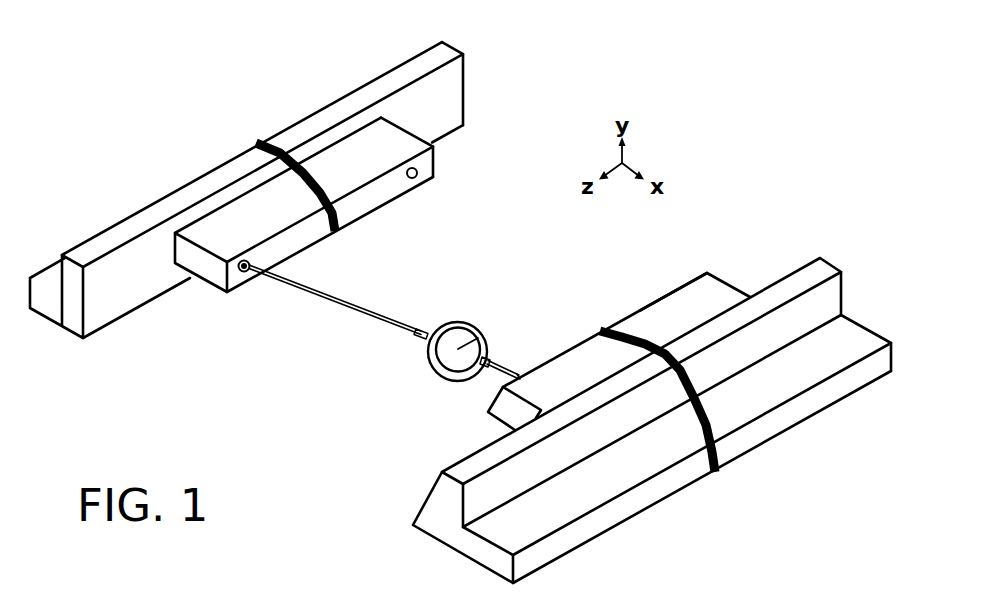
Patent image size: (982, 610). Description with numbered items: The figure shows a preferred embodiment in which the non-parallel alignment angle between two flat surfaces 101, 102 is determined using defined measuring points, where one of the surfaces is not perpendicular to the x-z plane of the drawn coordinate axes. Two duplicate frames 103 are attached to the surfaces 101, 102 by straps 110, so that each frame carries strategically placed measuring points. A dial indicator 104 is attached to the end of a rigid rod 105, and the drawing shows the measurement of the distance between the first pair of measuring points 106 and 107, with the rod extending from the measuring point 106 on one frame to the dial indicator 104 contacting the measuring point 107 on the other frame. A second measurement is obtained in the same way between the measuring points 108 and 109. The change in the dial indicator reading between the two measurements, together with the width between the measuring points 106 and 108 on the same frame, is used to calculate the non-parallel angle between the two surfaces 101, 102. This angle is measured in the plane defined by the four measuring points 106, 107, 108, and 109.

The flat surface 101 is at (103, 297).
The flat surface 102 is at (428, 494).
The duplicate frame 103 is at (434, 153).
The dial indicator 104 is at (487, 323).
The rigid rod 105 is at (348, 317).
The measuring point 106 is at (242, 277).
The measuring point 107 is at (521, 368).
The measuring point 108 is at (419, 175).
The measuring point 109 is at (688, 278).
The strap 110 is at (258, 141).